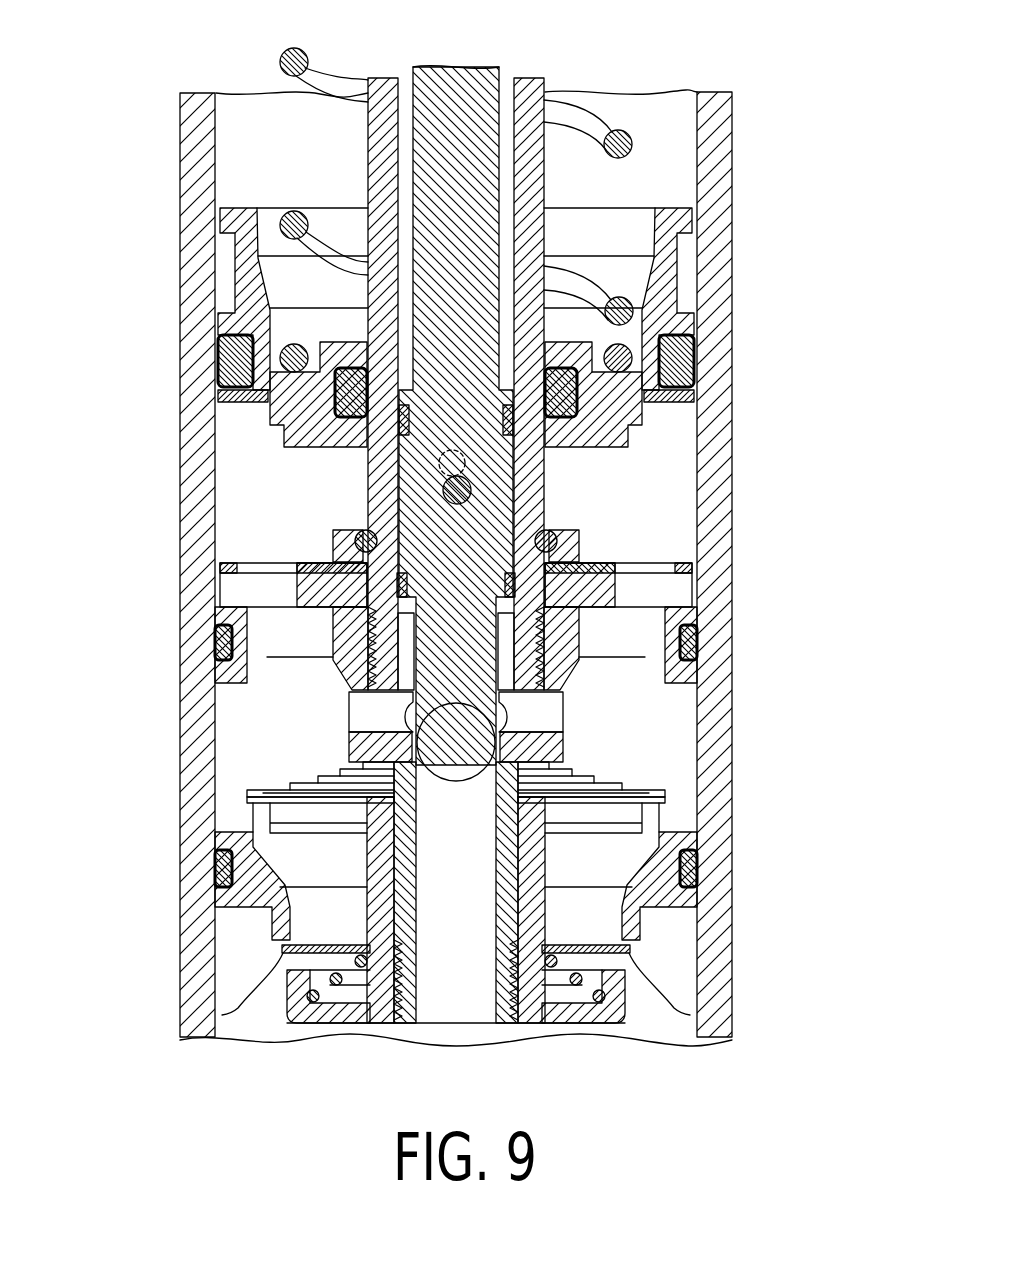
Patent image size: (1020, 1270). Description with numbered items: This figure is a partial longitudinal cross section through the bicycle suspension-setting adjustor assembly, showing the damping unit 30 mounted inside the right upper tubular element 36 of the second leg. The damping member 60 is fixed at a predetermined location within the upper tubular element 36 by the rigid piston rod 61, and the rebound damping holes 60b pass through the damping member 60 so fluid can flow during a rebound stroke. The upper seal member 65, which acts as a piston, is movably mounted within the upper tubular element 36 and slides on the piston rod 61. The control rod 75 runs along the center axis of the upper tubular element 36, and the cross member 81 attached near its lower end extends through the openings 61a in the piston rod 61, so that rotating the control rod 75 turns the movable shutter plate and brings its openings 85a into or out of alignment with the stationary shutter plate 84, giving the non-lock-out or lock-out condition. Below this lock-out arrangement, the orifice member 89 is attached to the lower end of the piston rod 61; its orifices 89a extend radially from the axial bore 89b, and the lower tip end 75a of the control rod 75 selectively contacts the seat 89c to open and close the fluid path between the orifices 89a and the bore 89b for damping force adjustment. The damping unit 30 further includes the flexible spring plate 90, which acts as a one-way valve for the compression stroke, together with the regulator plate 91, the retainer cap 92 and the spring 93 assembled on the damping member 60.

The damping unit 30 is at (200, 868).
The right upper tubular element 36 is at (180, 166).
The damping member 60 is at (690, 822).
The rebound damping holes 60b is at (250, 840).
The piston rod 61 is at (368, 168).
The openings 61a is at (445, 463).
The upper seal member 65 is at (216, 264).
The control rod 75 is at (468, 80).
The lower tip end 75a is at (455, 782).
The cross member 81 is at (472, 493).
The stationary shutter plate 84 is at (220, 617).
The openings 85a is at (260, 689).
The orifice member 89 is at (362, 745).
The orifices 89a is at (360, 703).
The bore 89b is at (485, 975).
The seat 89c is at (495, 756).
The flexible spring plate 90 is at (655, 800).
The regulator plate 91 is at (228, 1013).
The retainer cap 92 is at (620, 1006).
The spring 93 is at (572, 963).